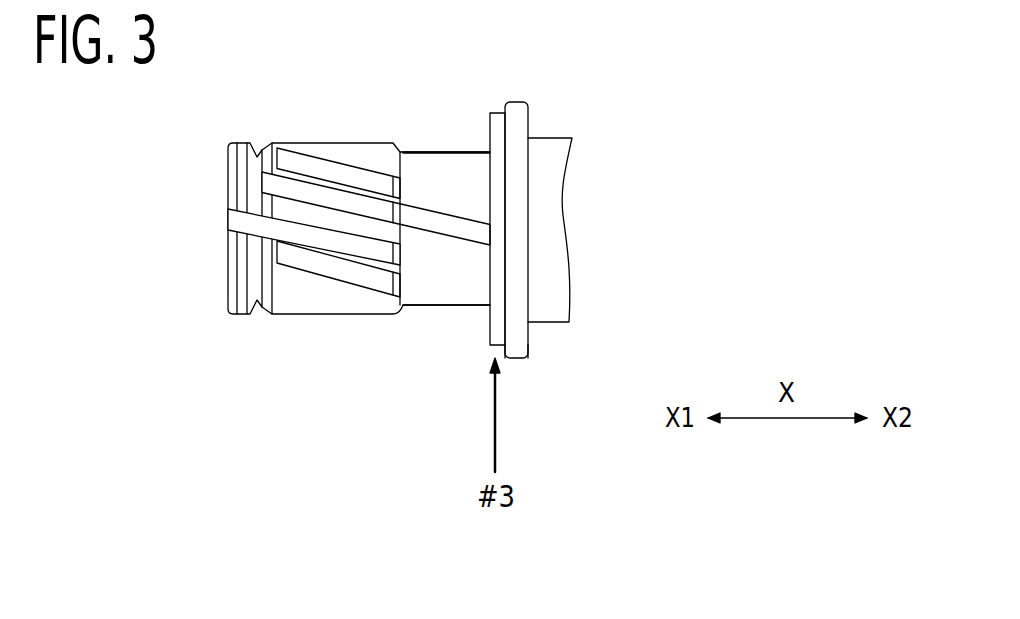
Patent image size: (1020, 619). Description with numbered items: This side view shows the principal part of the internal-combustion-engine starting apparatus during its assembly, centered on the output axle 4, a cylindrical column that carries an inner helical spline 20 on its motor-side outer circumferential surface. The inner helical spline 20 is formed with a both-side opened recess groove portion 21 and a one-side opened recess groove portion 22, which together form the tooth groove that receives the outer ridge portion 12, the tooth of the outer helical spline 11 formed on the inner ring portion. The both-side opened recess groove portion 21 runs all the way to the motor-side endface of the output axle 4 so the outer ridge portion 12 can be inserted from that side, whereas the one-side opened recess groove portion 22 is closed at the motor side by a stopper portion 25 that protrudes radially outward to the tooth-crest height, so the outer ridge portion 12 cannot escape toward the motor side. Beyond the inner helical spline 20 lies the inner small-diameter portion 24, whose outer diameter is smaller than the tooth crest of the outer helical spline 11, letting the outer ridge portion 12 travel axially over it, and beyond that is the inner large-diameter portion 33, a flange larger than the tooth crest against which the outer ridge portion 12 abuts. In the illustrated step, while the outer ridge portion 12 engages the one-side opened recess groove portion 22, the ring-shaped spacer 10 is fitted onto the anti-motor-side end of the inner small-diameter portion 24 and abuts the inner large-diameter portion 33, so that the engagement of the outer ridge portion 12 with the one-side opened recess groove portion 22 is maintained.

The output axle 4 is at (547, 186).
The spacer 10 is at (497, 123).
The outer helical spline 11 is at (441, 321).
The outer ridge portion 12 is at (460, 240).
The inner helical spline 20 is at (334, 331).
The both-side opened recess groove portion 21 is at (316, 243).
The one-side opened recess groove portion 22 is at (338, 293).
The inner small-diameter portion 24 is at (438, 152).
The stopper portion 25 is at (230, 290).
The inner large-diameter portion 33 is at (515, 352).